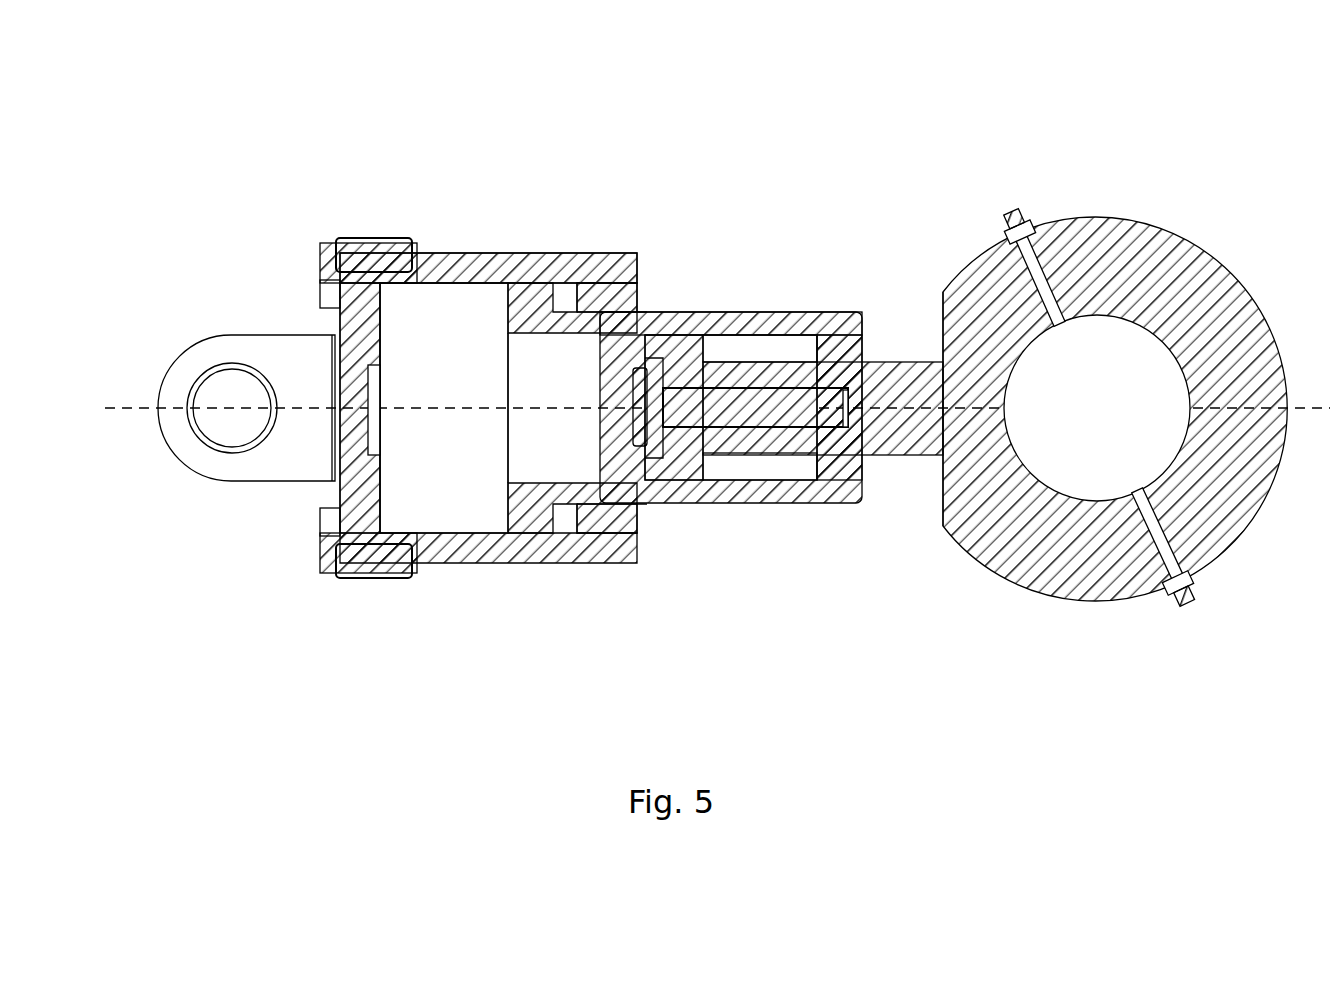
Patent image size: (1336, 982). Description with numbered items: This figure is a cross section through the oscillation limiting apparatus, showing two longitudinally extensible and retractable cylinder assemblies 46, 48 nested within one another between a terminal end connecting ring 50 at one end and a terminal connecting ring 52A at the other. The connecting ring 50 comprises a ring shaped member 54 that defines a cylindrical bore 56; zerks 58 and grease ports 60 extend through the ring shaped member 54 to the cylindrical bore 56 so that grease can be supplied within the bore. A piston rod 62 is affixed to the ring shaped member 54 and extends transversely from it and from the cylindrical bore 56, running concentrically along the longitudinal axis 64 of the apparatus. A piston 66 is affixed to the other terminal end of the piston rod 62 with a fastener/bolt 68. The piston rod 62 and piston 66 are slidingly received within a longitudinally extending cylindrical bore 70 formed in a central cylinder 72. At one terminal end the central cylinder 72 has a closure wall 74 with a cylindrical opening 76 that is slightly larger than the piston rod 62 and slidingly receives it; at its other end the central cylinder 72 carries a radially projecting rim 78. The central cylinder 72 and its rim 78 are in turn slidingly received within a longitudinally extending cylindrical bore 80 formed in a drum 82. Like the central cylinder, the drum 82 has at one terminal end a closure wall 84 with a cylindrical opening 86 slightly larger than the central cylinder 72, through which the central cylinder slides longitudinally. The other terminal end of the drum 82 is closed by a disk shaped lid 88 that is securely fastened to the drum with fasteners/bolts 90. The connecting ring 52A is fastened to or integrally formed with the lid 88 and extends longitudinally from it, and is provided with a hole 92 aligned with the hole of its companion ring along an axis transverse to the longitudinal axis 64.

The cylinder assembly 46 is at (757, 312).
The cylinder assembly 48 is at (508, 253).
The terminal end connecting ring 50 is at (1142, 223).
The terminal connecting ring 52A is at (232, 335).
The ring shaped member 54 is at (1058, 562).
The cylindrical bore 56 is at (1143, 342).
The zerk 58 is at (1022, 223).
The grease port 60 is at (1042, 283).
The piston rod 62 is at (884, 375).
The longitudinal axis 64 is at (704, 396).
The piston 66 is at (680, 457).
The fastener/bolt 68 is at (770, 420).
The cylindrical bore 70 is at (738, 472).
The central cylinder 72 is at (710, 323).
The closure wall 74 is at (843, 330).
The cylindrical opening 76 is at (852, 368).
The radially projecting rim 78 is at (533, 298).
The cylindrical bore 80 is at (453, 503).
The drum 82 is at (471, 260).
The closure wall 84 is at (613, 295).
The cylindrical opening 86 is at (610, 313).
The disk shaped lid 88 is at (360, 483).
The fastener/bolt 90 is at (383, 263).
The hole 92 is at (223, 432).